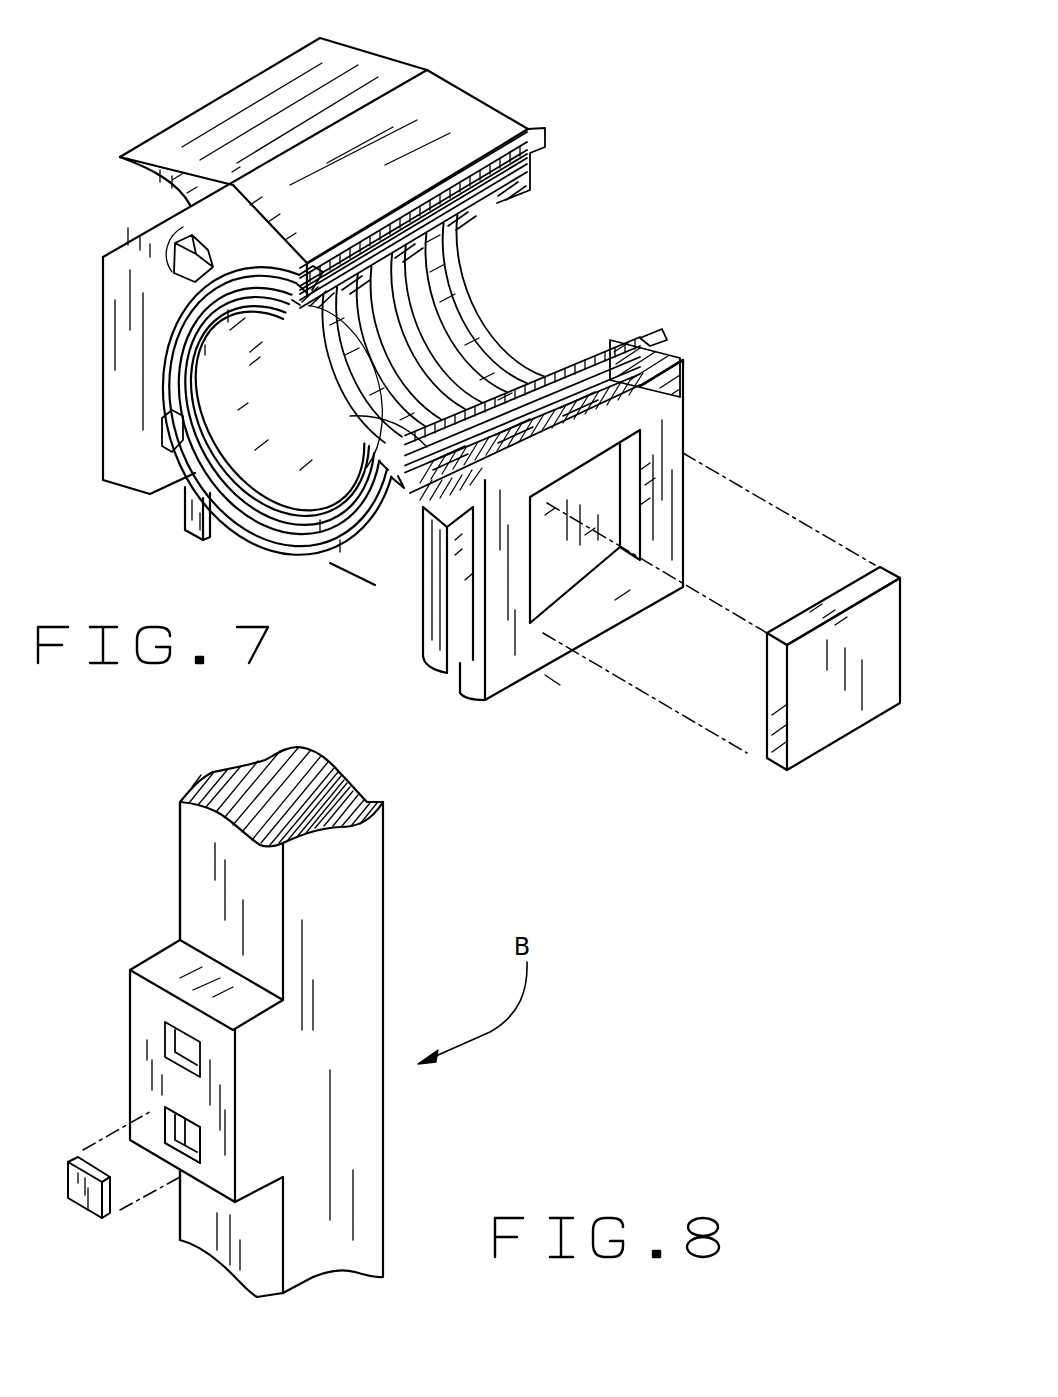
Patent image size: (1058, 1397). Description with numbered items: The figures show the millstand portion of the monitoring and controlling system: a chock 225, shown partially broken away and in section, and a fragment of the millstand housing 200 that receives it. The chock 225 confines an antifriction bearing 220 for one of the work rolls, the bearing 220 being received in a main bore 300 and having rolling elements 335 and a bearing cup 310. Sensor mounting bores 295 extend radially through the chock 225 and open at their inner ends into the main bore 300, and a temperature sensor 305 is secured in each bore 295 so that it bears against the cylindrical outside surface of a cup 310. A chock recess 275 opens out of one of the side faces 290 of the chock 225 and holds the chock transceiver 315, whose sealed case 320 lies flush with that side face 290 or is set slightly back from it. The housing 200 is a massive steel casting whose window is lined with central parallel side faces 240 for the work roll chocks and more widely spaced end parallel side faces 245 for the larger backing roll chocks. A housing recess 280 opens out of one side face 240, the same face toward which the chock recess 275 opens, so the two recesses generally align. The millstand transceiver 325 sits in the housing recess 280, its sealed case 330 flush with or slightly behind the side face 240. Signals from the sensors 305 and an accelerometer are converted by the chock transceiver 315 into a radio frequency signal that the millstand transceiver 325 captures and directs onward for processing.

In FIG. 8, the housing 200 is at (390, 877).
In FIG. 7, the antifriction bearing 220 is at (477, 310).
In FIG. 7, the chock 225 is at (455, 84).
In FIG. 8, the central parallel side face 240 is at (163, 1080).
In FIG. 8, the end parallel side face 245 is at (200, 838).
In FIG. 7, the chock recess 275 is at (578, 555).
In FIG. 8, the housing recess 280 is at (183, 1132).
In FIG. 7, the side face 290 is at (500, 677).
In FIG. 7, the sensor mounting bore 295 is at (617, 417).
In FIG. 7, the main bore 300 is at (357, 417).
In FIG. 7, the temperature sensor 305 is at (673, 373).
In FIG. 7, the bearing cup 310 is at (487, 157).
In FIG. 7, the chock transceiver 315 is at (833, 712).
In FIG. 7, the sealed case 320 is at (787, 715).
In FIG. 8, the millstand transceiver 325 is at (177, 1043).
In FIG. 8, the sealed case 330 is at (83, 1210).
In FIG. 7, the rolling element 335 is at (510, 200).